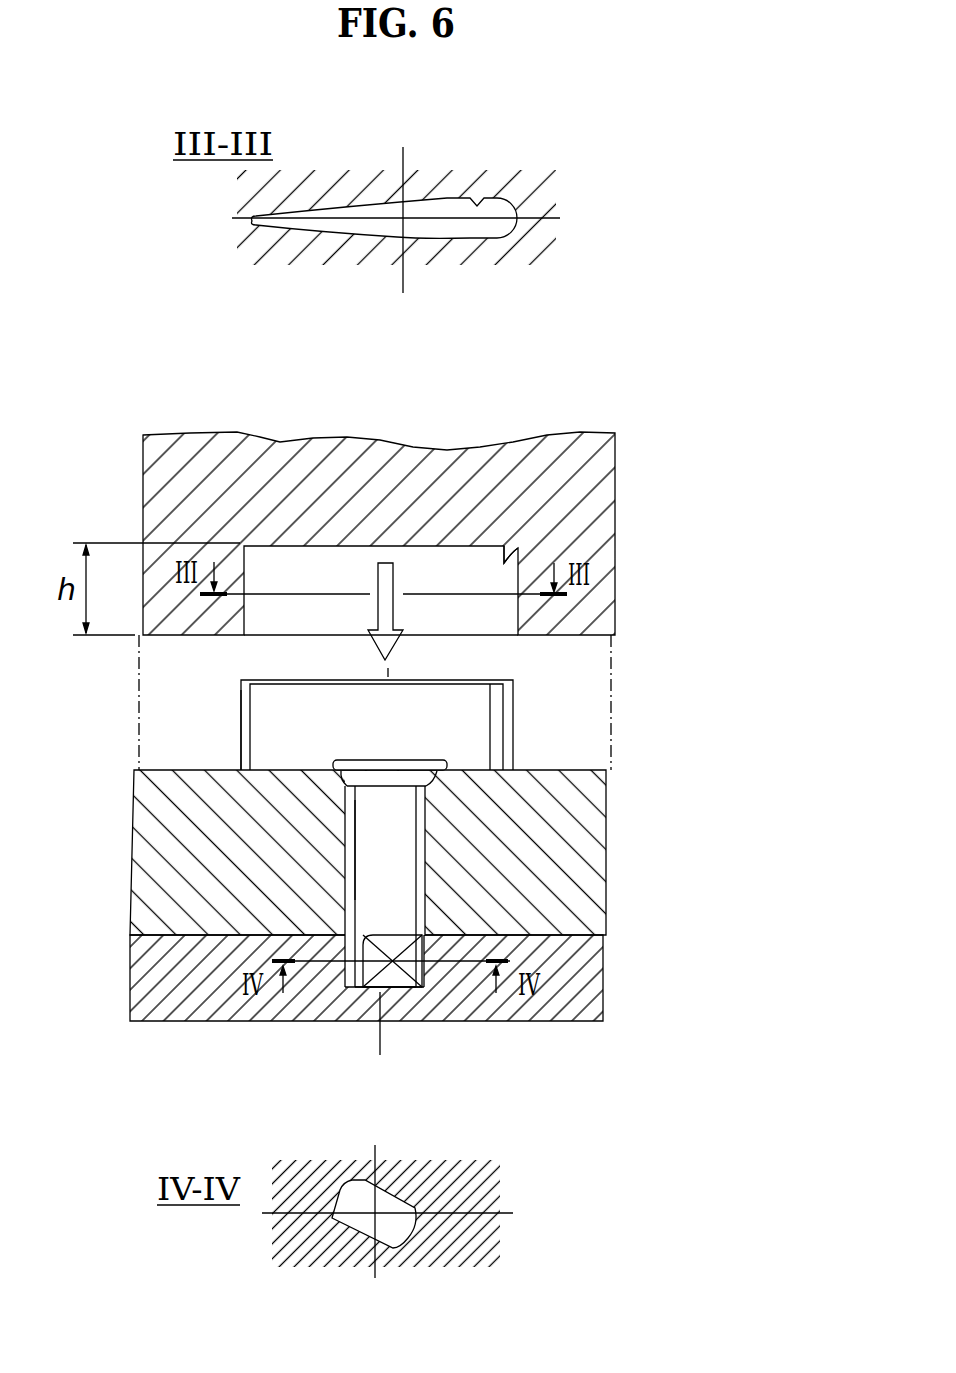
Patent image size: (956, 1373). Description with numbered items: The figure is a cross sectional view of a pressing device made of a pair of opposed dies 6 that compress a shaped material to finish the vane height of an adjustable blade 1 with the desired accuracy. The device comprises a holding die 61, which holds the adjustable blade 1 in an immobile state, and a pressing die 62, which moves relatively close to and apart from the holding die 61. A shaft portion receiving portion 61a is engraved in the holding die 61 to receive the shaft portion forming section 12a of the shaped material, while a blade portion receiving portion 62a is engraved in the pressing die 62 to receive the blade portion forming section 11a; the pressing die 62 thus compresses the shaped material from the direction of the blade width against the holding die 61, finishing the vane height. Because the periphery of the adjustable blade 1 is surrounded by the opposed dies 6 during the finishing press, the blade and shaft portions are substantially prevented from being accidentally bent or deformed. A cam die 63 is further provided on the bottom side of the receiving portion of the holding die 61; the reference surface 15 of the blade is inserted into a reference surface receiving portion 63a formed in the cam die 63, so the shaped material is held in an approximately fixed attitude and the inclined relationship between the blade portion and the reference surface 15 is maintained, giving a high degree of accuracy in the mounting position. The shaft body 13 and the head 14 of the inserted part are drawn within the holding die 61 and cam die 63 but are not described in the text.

The adjustable blade 1 is at (376, 725).
The opposed dies 6 is at (370, 1023).
The blade portion forming section 11a is at (262, 709).
The shaft portion forming section 12a is at (363, 842).
The rivet shaft 13 is at (430, 777).
The rivet head 14 is at (402, 760).
The reference surface 15 is at (397, 980).
The holding die 61 is at (593, 855).
The shaft portion receiving portion 61a is at (413, 886).
The pressing die 62 is at (493, 284).
The blade portion receiving portion 62a is at (477, 205).
The cam die 63 is at (593, 970).
The reference surface receiving portion 63a is at (416, 948).